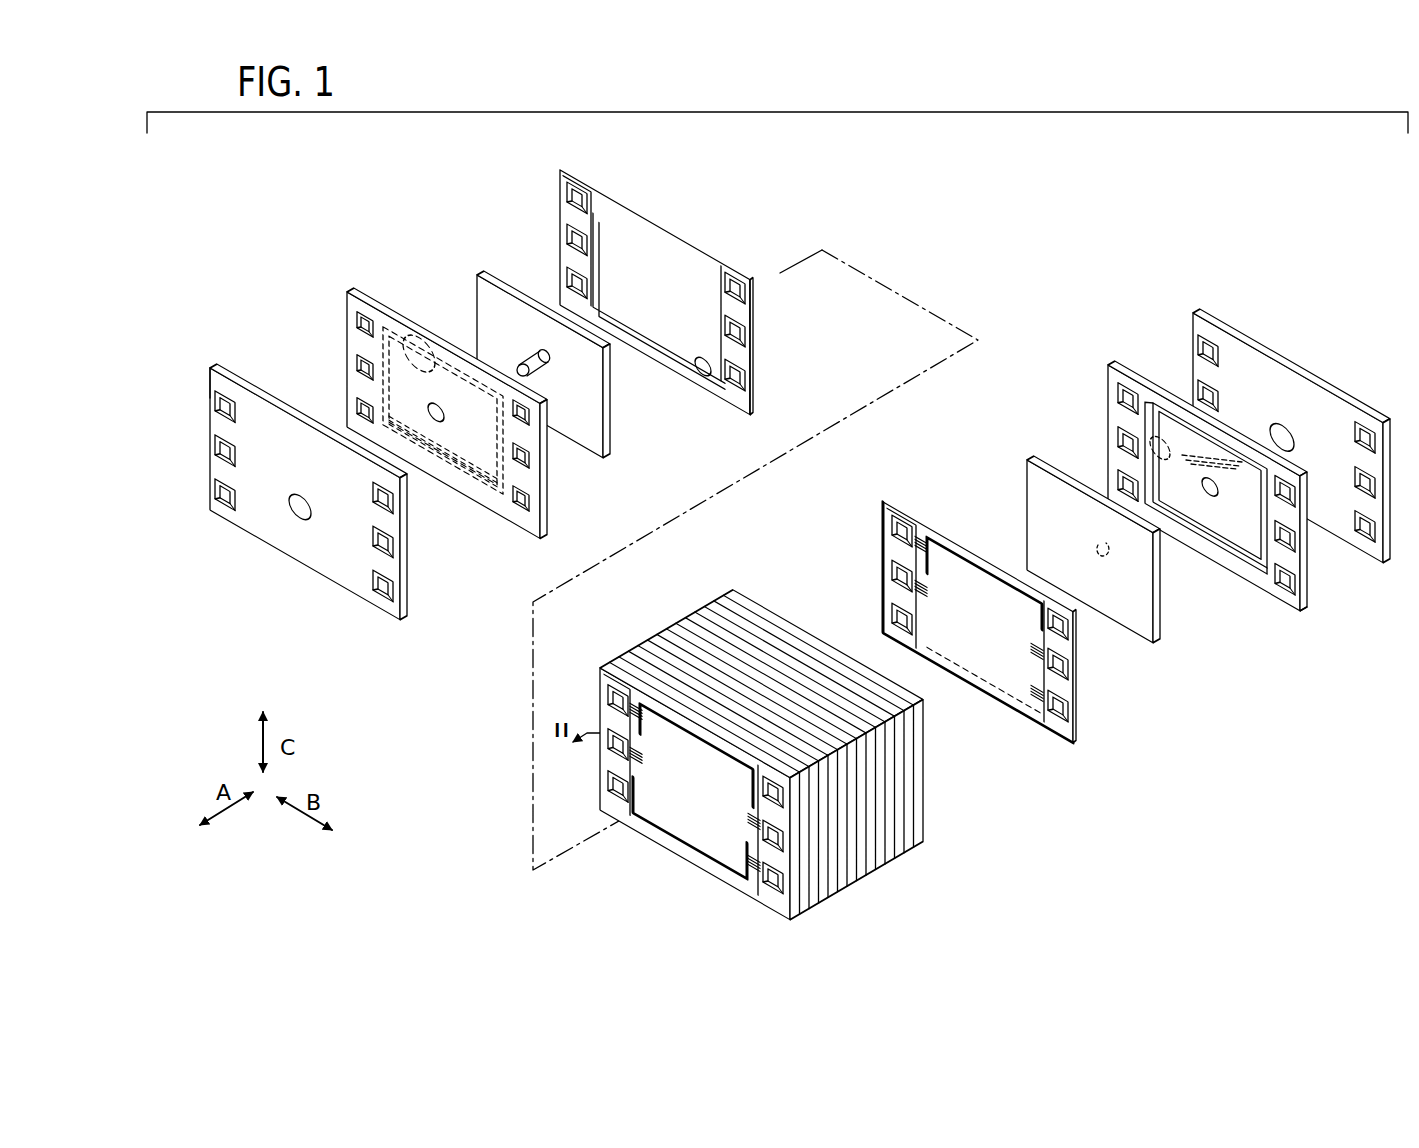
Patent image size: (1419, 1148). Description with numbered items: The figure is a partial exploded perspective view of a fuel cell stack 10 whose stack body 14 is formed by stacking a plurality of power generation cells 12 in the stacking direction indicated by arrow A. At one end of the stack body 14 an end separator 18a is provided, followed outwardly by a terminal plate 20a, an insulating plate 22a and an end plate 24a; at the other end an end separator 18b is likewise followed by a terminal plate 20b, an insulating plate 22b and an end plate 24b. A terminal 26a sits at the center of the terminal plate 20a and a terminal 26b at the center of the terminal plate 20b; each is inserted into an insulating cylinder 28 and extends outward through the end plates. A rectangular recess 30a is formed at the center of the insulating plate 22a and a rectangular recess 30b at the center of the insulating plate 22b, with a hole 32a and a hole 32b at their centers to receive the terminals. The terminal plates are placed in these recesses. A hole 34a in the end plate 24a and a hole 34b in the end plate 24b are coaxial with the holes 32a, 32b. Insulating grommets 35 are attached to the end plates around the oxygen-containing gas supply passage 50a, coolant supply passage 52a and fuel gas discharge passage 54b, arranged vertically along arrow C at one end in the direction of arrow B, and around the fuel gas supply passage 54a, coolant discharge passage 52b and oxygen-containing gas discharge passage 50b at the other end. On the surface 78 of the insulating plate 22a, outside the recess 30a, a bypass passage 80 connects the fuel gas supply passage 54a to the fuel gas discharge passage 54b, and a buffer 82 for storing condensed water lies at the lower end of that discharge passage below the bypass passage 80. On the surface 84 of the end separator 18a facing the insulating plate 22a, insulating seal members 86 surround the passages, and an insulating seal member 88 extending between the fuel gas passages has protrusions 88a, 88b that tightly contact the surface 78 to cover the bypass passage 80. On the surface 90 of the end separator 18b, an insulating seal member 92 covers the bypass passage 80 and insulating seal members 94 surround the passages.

The fuel cell stack 10 is at (1127, 193).
The power generation cell 12 is at (963, 913).
The stack body 14 is at (784, 767).
The end separator 18a is at (558, 165).
The end separator 18b is at (882, 499).
The terminal plate 20a is at (513, 306).
The terminal plate 20b is at (1028, 505).
The insulating plate 22a is at (348, 289).
The insulating plate 22b is at (1107, 362).
The end plate 24a is at (275, 563).
The end plate 24b is at (1258, 342).
The terminal 26a is at (516, 368).
The terminal 26b is at (1135, 549).
The insulating cylinder 28 is at (545, 373).
The rectangular recess 30a is at (417, 336).
The rectangular recess 30b is at (1158, 448).
The hole 32a is at (437, 405).
The hole 32b is at (1214, 497).
The hole 34a is at (297, 498).
The hole 34b is at (1273, 436).
The insulating grommet 35 is at (208, 385).
The oxygen-containing gas supply passage 50a is at (372, 497).
The oxygen-containing gas discharge passage 50b is at (220, 494).
The coolant supply passage 52a is at (372, 543).
The coolant discharge passage 52b is at (220, 448).
The fuel gas supply passage 54a is at (220, 402).
The fuel gas discharge passage 54b is at (378, 593).
The surface 78 is at (1288, 609).
The bypass passage 80 is at (490, 493).
The buffer 82 is at (1272, 594).
The surface 84 is at (750, 414).
The insulating seal member 86 is at (581, 184).
The insulating seal member 88 is at (659, 370).
The protrusion 88a is at (672, 353).
The protrusion 88b is at (709, 379).
The surface 90 is at (1069, 746).
The insulating seal member 92 is at (978, 691).
The insulating seal member 94 is at (908, 506).